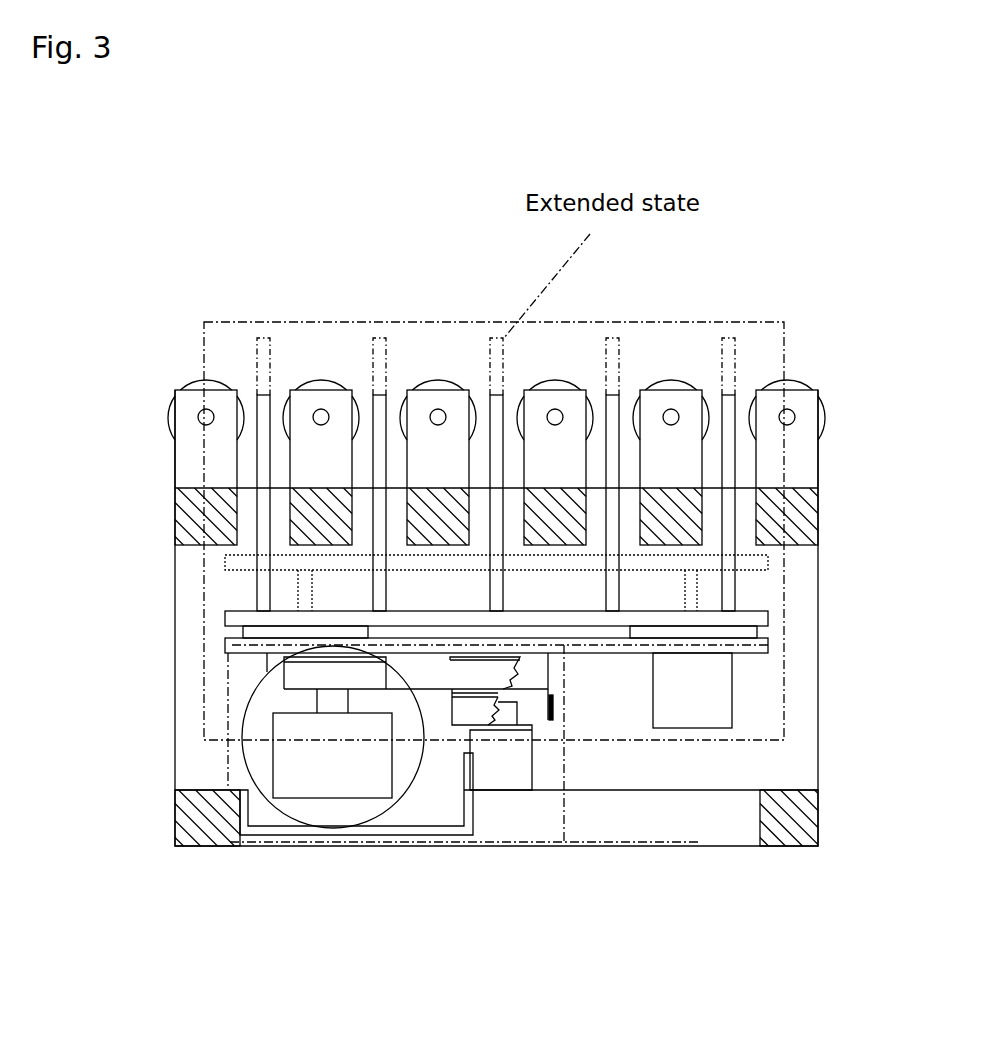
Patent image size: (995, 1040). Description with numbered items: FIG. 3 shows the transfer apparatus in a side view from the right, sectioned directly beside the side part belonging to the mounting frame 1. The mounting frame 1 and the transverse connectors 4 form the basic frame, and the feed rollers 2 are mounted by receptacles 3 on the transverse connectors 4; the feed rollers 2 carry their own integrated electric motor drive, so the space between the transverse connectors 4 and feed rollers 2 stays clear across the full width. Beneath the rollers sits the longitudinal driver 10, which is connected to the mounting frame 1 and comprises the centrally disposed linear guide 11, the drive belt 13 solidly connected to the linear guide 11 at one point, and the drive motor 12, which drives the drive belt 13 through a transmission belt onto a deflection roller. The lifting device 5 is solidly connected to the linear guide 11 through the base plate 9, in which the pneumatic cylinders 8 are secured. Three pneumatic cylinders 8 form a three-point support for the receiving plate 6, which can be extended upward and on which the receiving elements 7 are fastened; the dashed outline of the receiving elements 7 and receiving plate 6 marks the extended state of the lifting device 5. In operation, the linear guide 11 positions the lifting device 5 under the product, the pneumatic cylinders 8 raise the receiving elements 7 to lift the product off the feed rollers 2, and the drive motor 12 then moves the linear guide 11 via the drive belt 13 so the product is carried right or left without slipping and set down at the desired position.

The mounting frame 1 is at (208, 821).
The feed rollers 2 is at (204, 386).
The receptacles 3 is at (220, 433).
The transverse connectors 4 is at (303, 511).
The lifting device 5 is at (423, 322).
The receiving plate 6 is at (328, 617).
The receiving elements 7 is at (263, 541).
The pneumatic cylinders 8 is at (690, 689).
The base plate 9 is at (690, 645).
The longitudinal driver 10 is at (455, 842).
The linear guide 11 is at (517, 712).
The drive motor 12 is at (330, 762).
The drive belt 13 is at (475, 708).